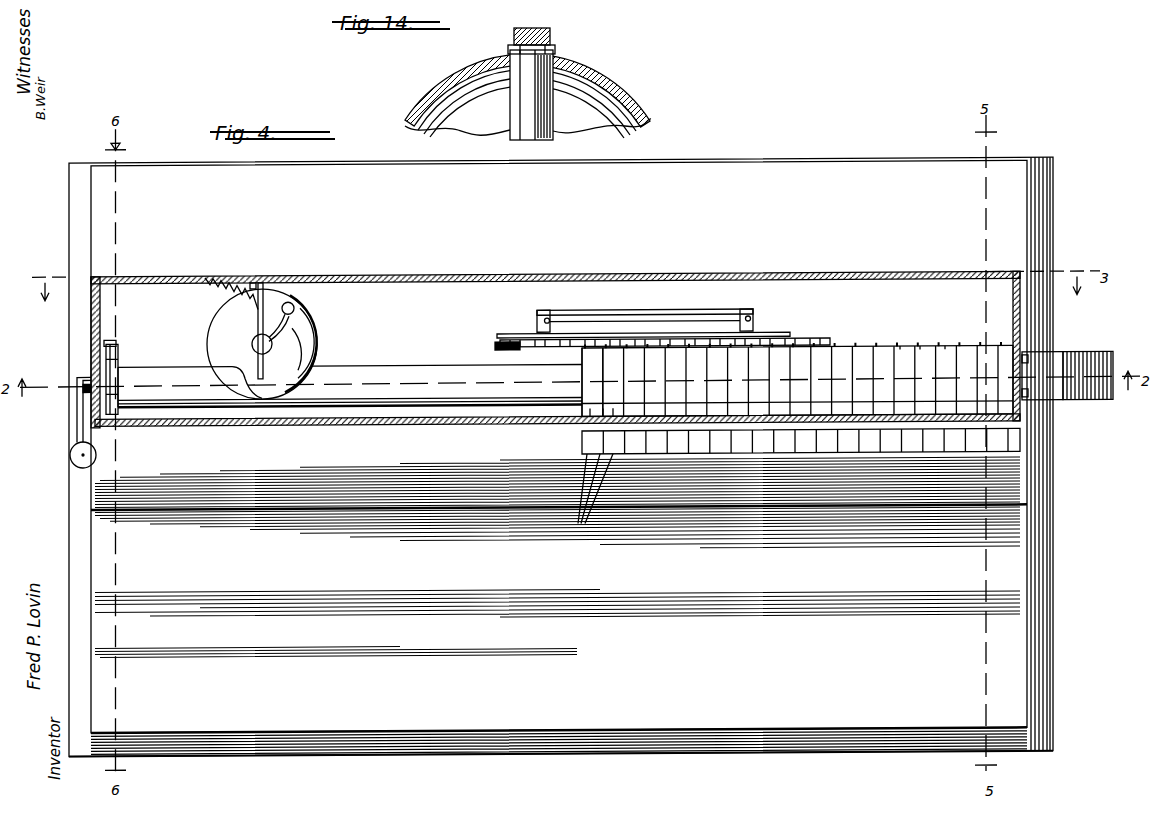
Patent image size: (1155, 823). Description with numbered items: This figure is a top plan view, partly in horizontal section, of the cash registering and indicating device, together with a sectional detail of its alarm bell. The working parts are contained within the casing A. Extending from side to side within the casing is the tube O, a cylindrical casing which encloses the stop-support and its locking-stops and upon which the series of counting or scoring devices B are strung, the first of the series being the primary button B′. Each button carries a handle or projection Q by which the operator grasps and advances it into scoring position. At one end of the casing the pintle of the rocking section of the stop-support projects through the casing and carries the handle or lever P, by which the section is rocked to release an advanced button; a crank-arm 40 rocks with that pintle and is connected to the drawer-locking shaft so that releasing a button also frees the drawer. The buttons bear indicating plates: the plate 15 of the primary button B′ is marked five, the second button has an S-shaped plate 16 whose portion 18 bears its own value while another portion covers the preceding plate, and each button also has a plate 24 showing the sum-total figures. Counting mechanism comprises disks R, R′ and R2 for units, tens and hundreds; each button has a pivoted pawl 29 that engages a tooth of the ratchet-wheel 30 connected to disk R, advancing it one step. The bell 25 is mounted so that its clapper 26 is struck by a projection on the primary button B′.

In FIG. 4, the casing A is at (76, 203).
In FIG. 4, the handle or lever P is at (80, 412).
In FIG. 4, the crank-arm 40 is at (118, 355).
In FIG. 14, the bell 25 is at (622, 92).
In FIG. 4, the bell 25 is at (312, 333).
In FIG. 4, the clapper 26 is at (257, 322).
In FIG. 4, the tube O is at (388, 373).
In FIG. 4, the ratchet-wheel 30 is at (497, 349).
In FIG. 4, the disk R is at (513, 334).
In FIG. 4, the disk R′ is at (632, 341).
In FIG. 4, the disk R2 is at (758, 333).
In FIG. 4, the counting, scoring, or indicating devices B is at (880, 360).
In FIG. 4, the first scoring device B′ is at (591, 362).
In FIG. 4, the pivoted pawl 29 is at (945, 351).
In FIG. 4, the plate 15 is at (590, 413).
In FIG. 4, the plate 16 is at (603, 413).
In FIG. 4, the portion 18 is at (613, 413).
In FIG. 4, the plate 24 is at (591, 502).
In FIG. 4, the handle or projection Q is at (582, 438).